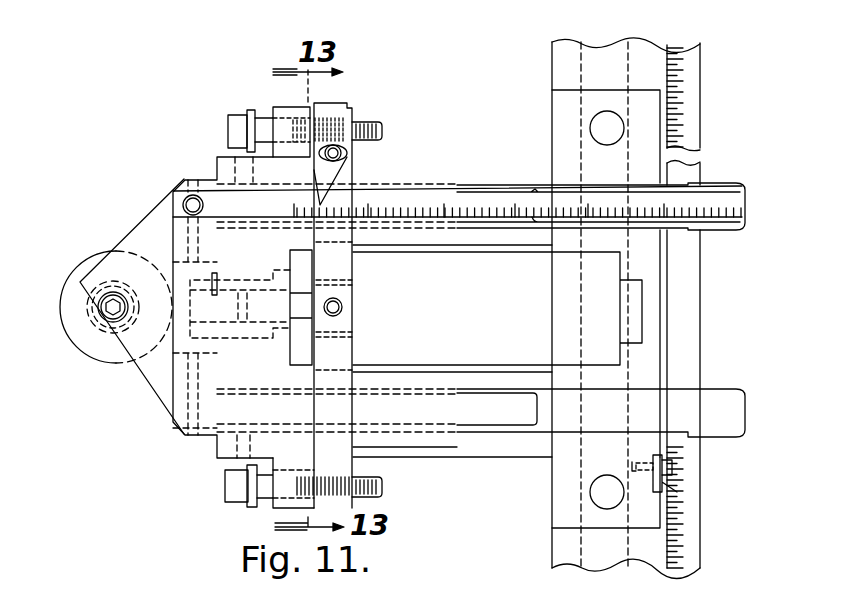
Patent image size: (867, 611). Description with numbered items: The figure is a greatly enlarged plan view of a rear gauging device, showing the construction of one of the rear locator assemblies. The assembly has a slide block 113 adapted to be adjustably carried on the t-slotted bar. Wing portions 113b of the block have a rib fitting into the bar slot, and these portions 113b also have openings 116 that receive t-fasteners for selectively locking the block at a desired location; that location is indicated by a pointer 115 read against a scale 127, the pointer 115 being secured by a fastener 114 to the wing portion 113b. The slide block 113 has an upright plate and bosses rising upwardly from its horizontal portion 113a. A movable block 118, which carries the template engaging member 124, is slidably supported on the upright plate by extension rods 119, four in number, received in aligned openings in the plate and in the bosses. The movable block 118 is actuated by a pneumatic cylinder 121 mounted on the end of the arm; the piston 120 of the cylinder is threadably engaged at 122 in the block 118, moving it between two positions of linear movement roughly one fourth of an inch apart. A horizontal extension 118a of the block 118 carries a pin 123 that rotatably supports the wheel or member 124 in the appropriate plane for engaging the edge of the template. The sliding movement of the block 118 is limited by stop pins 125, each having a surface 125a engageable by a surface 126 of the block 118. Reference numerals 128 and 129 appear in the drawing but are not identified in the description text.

The slide block 113 is at (483, 466).
The horizontal portion 113a is at (442, 453).
The wing portions 113b is at (558, 517).
The fastener 114 is at (677, 464).
The pointer 115 is at (675, 490).
The openings 116 is at (594, 118).
The movable block 118 is at (266, 438).
The horizontal extension 118a is at (143, 375).
The extension rods 119 is at (515, 187).
The piston 120 is at (233, 320).
The pneumatic cylinder 121 is at (612, 355).
The threaded engagement 122 is at (223, 293).
The pin 123 is at (113, 296).
The template engaging member 124 is at (66, 338).
The stop pins 125 is at (226, 487).
The stop surface 125a is at (258, 503).
The block surface 126 is at (272, 508).
The scale 127 is at (693, 536).
The pointer 128 is at (347, 162).
The horizontal scale 129 is at (415, 197).